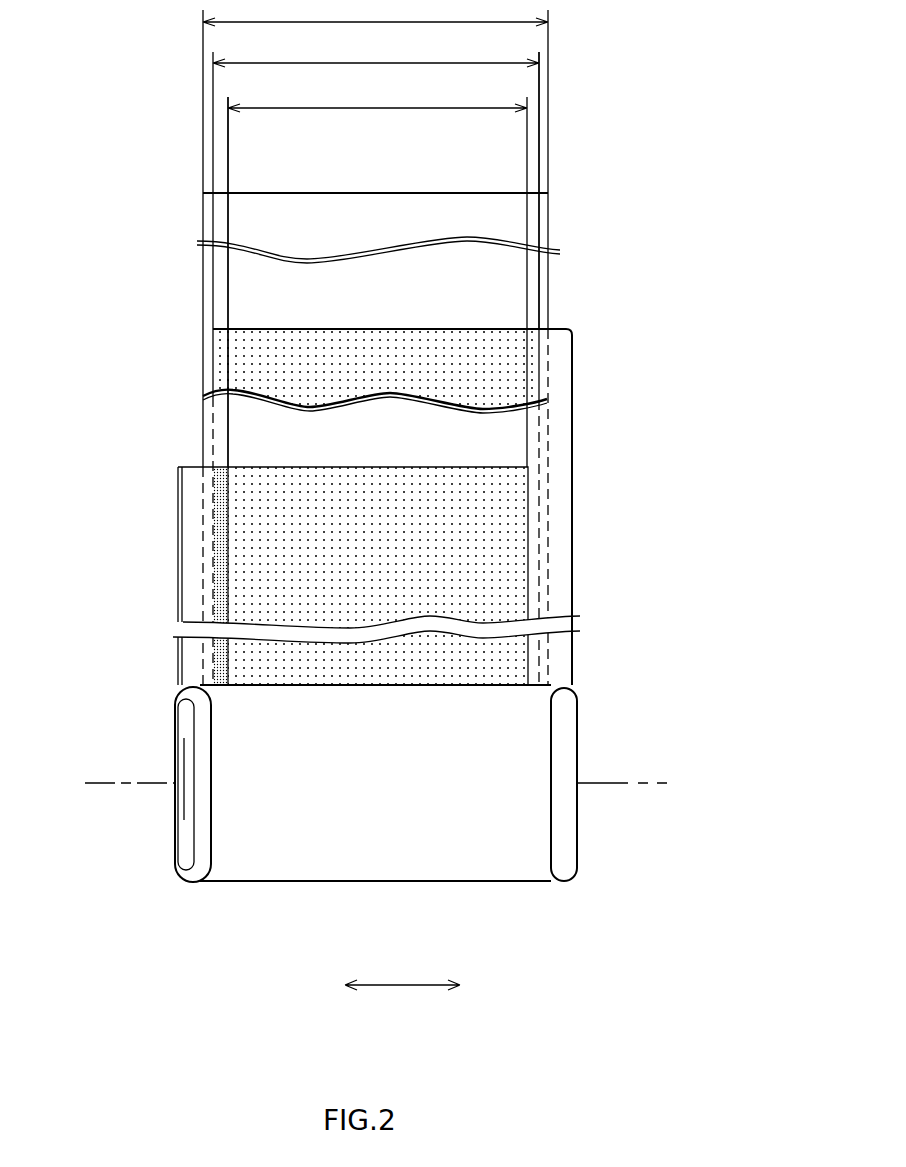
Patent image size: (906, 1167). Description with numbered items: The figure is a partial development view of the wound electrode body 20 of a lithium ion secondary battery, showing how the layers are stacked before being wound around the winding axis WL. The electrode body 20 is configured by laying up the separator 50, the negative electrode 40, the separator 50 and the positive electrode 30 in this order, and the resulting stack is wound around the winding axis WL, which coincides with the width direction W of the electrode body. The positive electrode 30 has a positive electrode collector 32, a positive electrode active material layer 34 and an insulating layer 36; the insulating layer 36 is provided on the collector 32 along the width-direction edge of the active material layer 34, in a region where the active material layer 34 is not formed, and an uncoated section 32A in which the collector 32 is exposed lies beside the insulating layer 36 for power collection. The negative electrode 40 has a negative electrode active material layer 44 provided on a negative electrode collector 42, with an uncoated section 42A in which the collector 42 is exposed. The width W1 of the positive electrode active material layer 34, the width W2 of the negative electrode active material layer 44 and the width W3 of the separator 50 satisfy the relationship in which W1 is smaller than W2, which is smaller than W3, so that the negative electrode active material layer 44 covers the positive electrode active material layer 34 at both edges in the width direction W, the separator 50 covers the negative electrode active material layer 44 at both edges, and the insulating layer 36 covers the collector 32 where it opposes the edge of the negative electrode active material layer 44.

The wound electrode body 20 is at (378, 467).
The positive electrode 30 is at (357, 391).
The positive electrode collector 32 is at (292, 391).
The uncoated section 32A is at (190, 607).
The positive electrode active material layer 34 is at (260, 567).
The insulating layer 36 is at (217, 583).
The negative electrode 40 is at (451, 368).
The negative electrode collector 42 is at (456, 507).
The uncoated section 42A is at (560, 460).
The negative electrode active material layer 44 is at (473, 357).
The separator 50 is at (203, 300).
The winding axis WL is at (660, 782).
The width direction W is at (402, 1001).
The width of the positive electrode active material layer W1 is at (377, 274).
The width of the negative electrode active material layer W2 is at (376, 184).
The width of the separators W3 is at (375, 96).